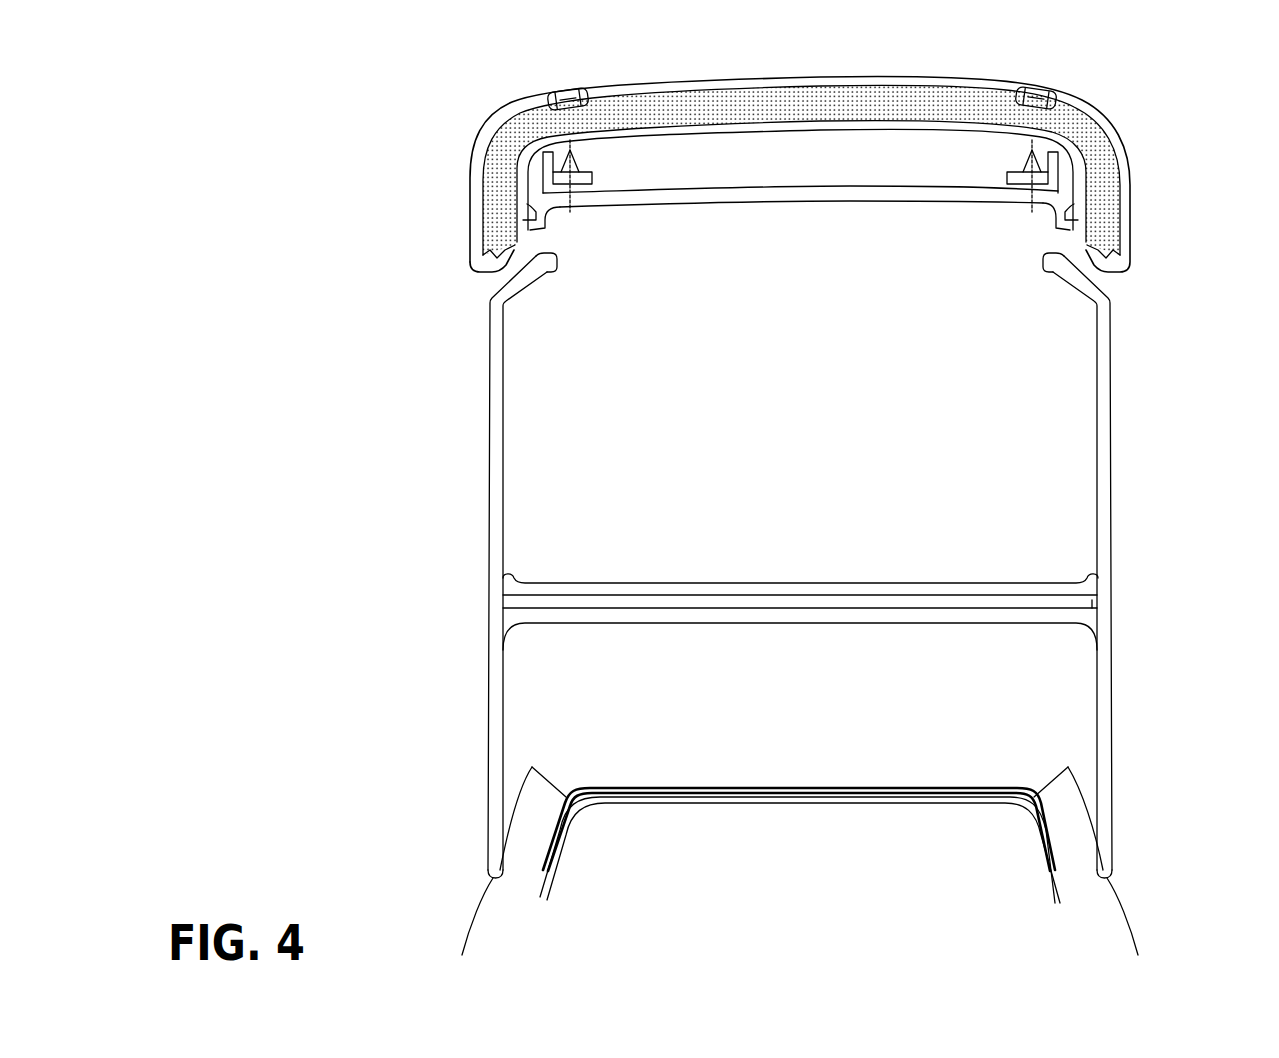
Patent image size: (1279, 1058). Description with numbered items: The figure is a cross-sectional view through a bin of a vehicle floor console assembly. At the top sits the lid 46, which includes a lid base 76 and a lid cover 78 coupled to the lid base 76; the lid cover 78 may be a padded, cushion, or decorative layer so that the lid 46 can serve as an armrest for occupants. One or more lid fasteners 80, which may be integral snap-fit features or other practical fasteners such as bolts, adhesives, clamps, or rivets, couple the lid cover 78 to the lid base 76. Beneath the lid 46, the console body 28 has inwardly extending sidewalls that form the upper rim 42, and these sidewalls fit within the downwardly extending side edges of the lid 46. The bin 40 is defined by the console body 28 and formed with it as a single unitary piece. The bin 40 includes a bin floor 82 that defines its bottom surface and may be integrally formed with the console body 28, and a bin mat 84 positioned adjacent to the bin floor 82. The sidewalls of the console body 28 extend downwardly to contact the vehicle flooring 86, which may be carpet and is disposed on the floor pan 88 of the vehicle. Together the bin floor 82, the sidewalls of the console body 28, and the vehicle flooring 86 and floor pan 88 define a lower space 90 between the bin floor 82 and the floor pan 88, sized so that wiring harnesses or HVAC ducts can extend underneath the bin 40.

The console body 28 is at (1112, 477).
The bin 40 is at (912, 398).
The upper rim 42 is at (540, 260).
The lid 46 is at (1122, 84).
The lid base 76 is at (1057, 203).
The lid cover 78 is at (1012, 85).
The lid fasteners 80 is at (573, 160).
The bin floor 82 is at (1073, 598).
The bin mat 84 is at (1100, 588).
The vehicle flooring 86 is at (1115, 905).
The floor pan 88 is at (980, 787).
The lower space 90 is at (533, 699).